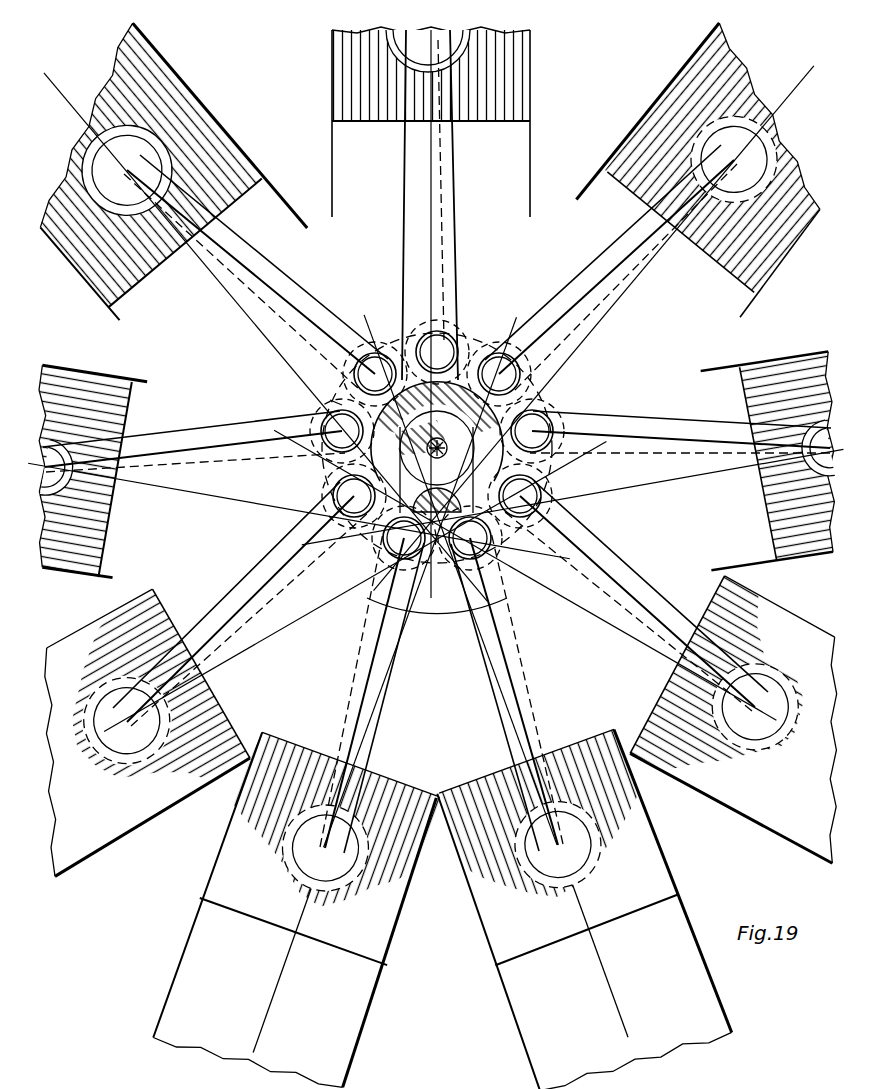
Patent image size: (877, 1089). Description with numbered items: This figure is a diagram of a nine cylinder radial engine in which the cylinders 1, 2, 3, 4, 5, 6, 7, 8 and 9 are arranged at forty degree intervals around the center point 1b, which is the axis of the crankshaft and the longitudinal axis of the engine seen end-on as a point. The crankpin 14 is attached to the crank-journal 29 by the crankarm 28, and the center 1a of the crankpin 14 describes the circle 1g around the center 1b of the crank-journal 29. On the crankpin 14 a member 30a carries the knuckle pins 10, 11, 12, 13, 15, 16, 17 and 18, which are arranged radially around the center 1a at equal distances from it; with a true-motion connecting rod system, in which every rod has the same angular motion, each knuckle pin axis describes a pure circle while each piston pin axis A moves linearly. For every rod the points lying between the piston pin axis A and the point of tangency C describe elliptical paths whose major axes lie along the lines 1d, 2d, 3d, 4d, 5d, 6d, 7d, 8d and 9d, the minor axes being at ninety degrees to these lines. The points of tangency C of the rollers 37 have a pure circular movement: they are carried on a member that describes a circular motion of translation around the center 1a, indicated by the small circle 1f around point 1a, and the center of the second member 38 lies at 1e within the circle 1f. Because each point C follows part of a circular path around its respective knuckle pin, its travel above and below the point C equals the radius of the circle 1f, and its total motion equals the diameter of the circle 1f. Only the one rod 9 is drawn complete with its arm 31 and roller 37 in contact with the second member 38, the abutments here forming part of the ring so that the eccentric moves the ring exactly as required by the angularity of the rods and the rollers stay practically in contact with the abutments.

The cylinder 1 is at (431, 190).
The center of crankpin 1a is at (437, 433).
The center point 1b is at (437, 605).
The line of major axis 1d is at (440, 100).
The center of member 38 1e is at (446, 453).
The small circle 1f is at (437, 492).
The circle 1g is at (437, 650).
The cylinder 2 is at (794, 268).
The line of major axis 2d is at (660, 258).
The cylinder 3 is at (573, 496).
The line of major axis 3d is at (680, 473).
The cylinder 4 is at (782, 832).
The line of major axis 4d is at (628, 611).
The cylinder 5 is at (470, 950).
The line of major axis 5d is at (510, 688).
The cylinder 6 is at (192, 890).
The line of major axis 6d is at (374, 690).
The cylinder 7 is at (255, 588).
The line of major axis 7d is at (250, 619).
The cylinder 8 is at (298, 502).
The line of major axis 8d is at (195, 488).
The rod 9 is at (248, 150).
The line of major axis 9d is at (242, 282).
The knuckle pin 10 is at (443, 345).
The knuckle pin 11 is at (511, 369).
The knuckle pin 12 is at (544, 431).
The knuckle pin 13 is at (530, 496).
The crankpin 14 is at (477, 538).
The knuckle pin 15 is at (392, 538).
The knuckle pin 16 is at (343, 496).
The knuckle pin 17 is at (337, 428).
The knuckle pin 18 is at (371, 363).
The crankarm 28 is at (451, 470).
The crank-journal 29 is at (464, 470).
The member 30a is at (410, 442).
The arm 31 is at (317, 394).
The roller 37 is at (452, 447).
The second member 38 is at (428, 432).